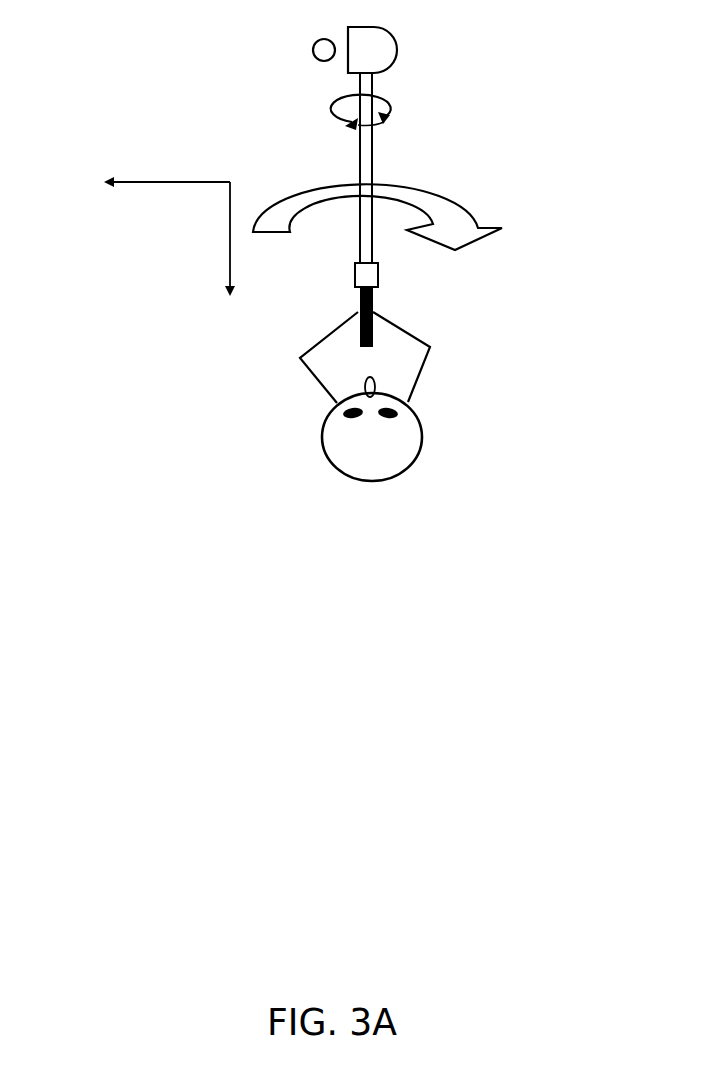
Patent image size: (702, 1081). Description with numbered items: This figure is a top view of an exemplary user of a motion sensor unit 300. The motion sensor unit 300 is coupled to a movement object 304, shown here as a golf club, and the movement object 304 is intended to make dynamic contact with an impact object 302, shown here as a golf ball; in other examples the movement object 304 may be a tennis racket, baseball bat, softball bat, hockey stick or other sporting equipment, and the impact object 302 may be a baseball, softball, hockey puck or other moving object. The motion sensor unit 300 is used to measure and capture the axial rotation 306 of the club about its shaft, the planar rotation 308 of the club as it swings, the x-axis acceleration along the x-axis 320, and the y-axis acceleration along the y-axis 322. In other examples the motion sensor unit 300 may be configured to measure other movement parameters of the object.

The motion sensor unit 300 is at (354, 267).
The impact object 302 is at (314, 44).
The movement object 304 is at (398, 52).
The axial rotation 306 is at (330, 113).
The planar rotation 308 is at (485, 240).
The x-axis 320 is at (202, 252).
The y-axis 322 is at (130, 183).